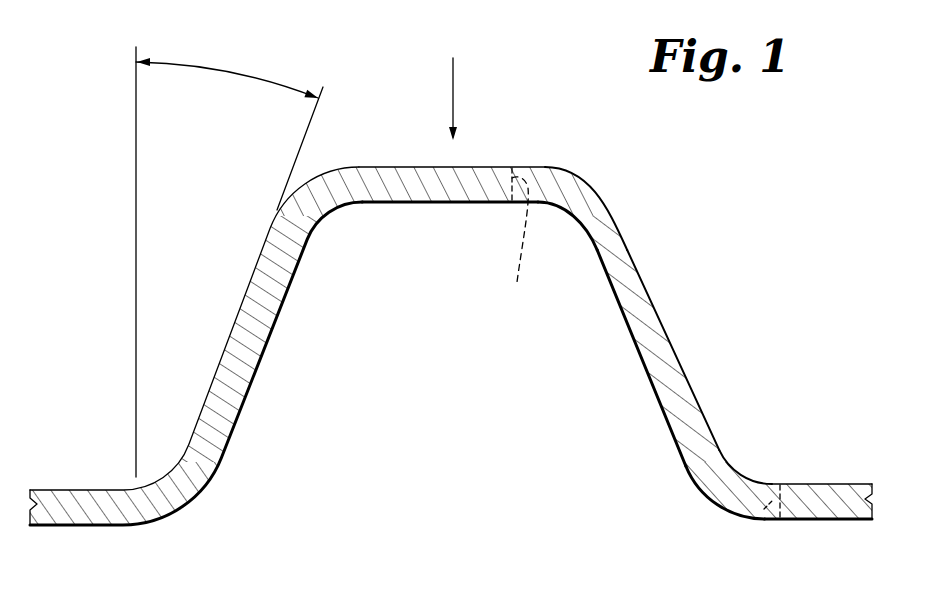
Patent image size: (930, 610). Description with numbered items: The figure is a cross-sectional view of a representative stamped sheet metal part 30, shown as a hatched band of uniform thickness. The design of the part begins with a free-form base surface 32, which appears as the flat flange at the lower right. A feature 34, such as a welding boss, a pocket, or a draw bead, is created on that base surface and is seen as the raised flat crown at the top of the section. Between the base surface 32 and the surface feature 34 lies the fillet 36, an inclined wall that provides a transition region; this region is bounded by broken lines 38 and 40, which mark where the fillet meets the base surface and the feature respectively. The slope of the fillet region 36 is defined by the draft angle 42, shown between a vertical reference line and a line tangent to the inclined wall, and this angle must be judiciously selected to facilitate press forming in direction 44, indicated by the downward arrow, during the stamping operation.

The stamped sheet metal part 30 is at (345, 420).
The free-form base surface 32 is at (833, 484).
The feature 34 is at (497, 168).
The fillet 36 is at (665, 334).
The broken line 38 is at (760, 522).
The broken line 40 is at (568, 242).
The draft angle 42 is at (225, 70).
The direction 44 is at (449, 86).